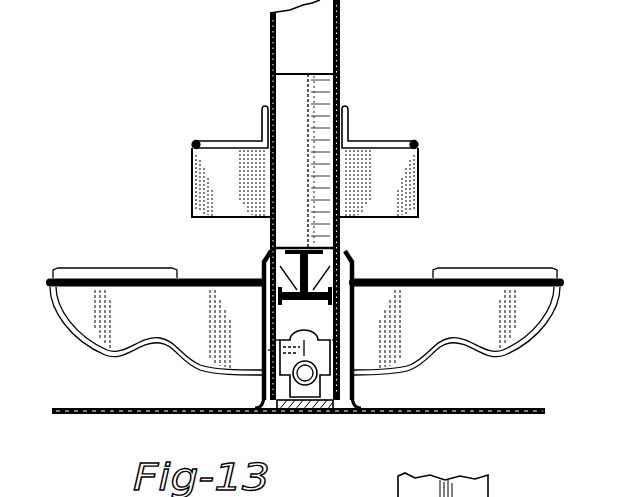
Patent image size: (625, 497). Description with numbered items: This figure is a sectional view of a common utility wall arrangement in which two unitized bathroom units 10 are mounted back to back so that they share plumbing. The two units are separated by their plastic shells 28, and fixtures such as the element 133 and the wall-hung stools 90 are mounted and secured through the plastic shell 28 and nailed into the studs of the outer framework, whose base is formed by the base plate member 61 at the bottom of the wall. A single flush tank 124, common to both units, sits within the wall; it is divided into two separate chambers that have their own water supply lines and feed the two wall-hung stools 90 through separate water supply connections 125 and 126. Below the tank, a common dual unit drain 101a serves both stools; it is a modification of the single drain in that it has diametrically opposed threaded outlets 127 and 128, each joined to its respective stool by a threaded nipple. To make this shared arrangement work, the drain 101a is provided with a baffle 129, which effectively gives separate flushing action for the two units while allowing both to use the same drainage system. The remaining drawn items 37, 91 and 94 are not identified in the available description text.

The unitized bathroom unit 10 is at (214, 83).
The plastic shell 28 is at (269, 29).
The base plate 37 is at (136, 408).
The base plate member 61 is at (305, 414).
The wall-hung stool 90 is at (70, 318).
The fragment element 91 is at (516, 489).
The fragment element 94 is at (443, 485).
The dual unit drain 101a is at (322, 331).
The flush tank 124 is at (307, 75).
The water supply connection 125 is at (350, 258).
The water supply connection 126 is at (263, 258).
The threaded outlet 127 is at (278, 336).
The threaded outlet 128 is at (343, 335).
The baffle 129 is at (271, 350).
The collar 133 is at (190, 183).